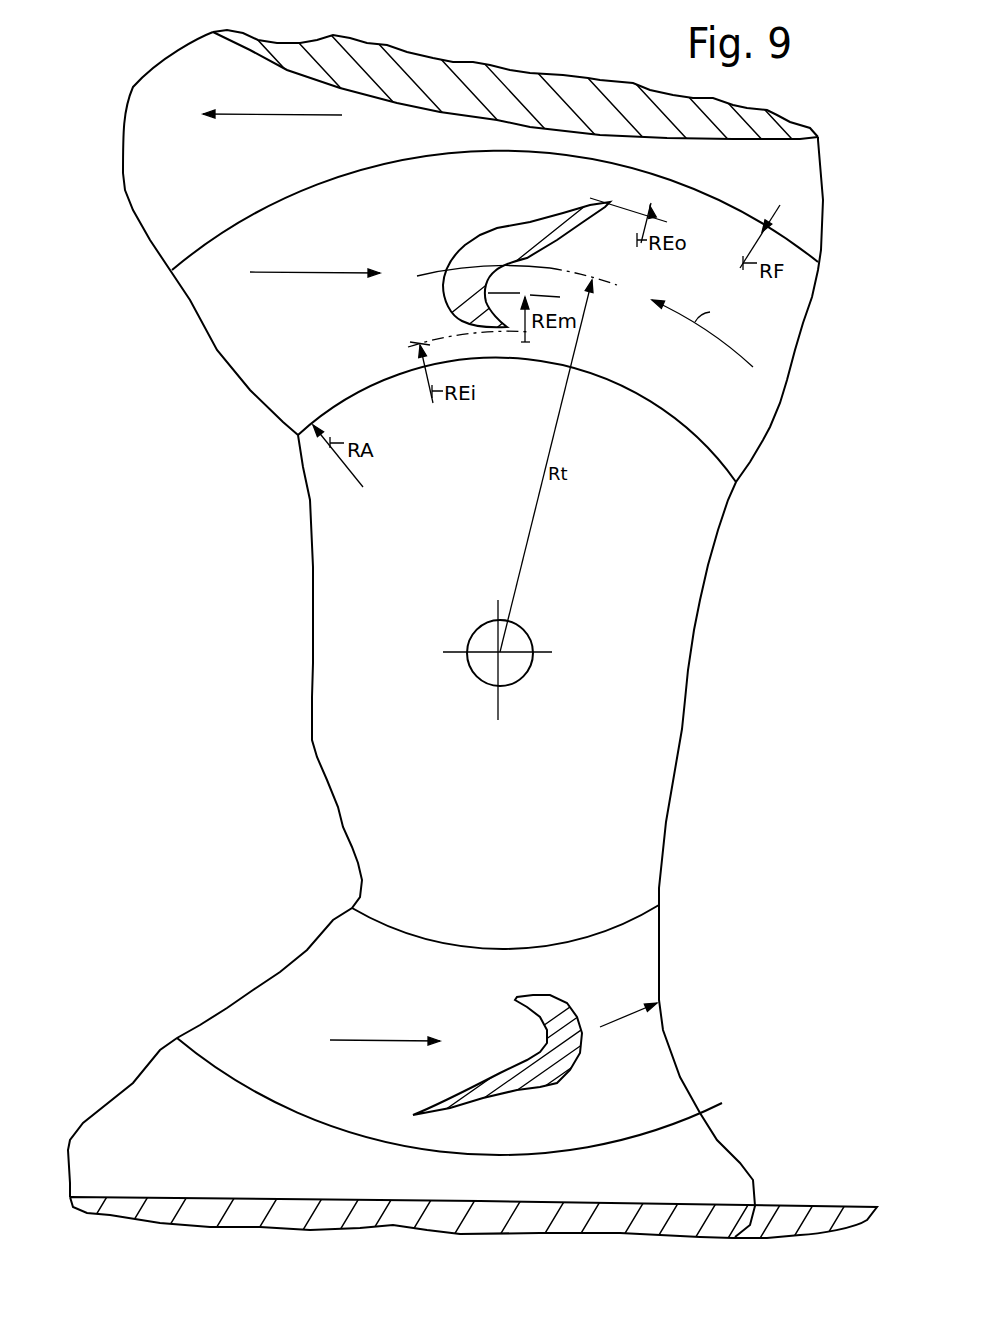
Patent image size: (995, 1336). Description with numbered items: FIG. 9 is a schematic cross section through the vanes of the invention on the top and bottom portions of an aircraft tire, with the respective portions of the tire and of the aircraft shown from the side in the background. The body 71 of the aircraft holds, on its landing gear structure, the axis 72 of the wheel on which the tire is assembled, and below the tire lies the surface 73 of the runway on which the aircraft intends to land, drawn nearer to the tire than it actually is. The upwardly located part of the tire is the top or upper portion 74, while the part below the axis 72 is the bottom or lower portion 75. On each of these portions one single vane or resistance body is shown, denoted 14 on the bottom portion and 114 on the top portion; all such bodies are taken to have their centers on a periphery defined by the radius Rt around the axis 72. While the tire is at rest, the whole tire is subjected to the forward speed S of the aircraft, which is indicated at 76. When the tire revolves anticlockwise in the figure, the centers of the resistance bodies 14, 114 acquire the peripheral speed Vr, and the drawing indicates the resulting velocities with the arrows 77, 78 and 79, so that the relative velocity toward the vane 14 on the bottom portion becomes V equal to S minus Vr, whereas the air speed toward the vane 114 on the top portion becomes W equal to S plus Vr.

The body of the aircraft 71 is at (737, 138).
The axis of the wheel 72 is at (503, 660).
The surface of the runway 73 is at (620, 1200).
The top portion of the tire 74 is at (350, 383).
The bottom portion of the tire 75 is at (380, 940).
The forward speed of the aircraft 76 is at (277, 116).
The arrow S direction 77 is at (288, 276).
The arrow V direction 78 is at (368, 1043).
The arrow Vr rotational direction 79 is at (713, 338).
The vane or resistance body on the top portion 114 is at (508, 237).
The vane or resistance body on the bottom portion 14 is at (537, 1088).